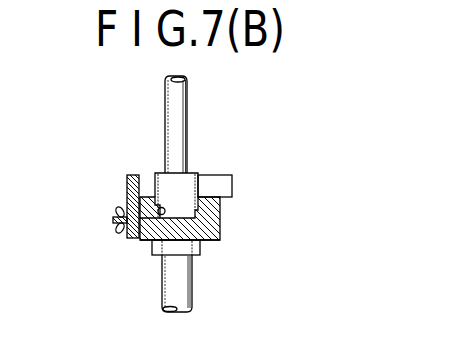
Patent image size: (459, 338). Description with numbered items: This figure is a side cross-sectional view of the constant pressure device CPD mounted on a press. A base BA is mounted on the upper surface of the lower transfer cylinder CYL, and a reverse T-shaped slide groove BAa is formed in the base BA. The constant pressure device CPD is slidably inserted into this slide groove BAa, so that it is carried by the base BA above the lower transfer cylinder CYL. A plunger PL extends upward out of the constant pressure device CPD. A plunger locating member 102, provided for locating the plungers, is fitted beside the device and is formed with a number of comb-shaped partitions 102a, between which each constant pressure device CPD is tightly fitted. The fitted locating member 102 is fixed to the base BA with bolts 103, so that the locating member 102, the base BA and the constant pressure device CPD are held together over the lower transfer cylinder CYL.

The plunger PL is at (178, 106).
The constant pressure device CPD is at (166, 185).
The comb-shaped partition 102a is at (216, 182).
The plunger locating member 102 is at (128, 184).
The bolt 103 is at (113, 220).
The base BA is at (216, 222).
The reverse T-shaped slide groove BAa is at (151, 240).
The lower transfer cylinder CYL is at (184, 288).